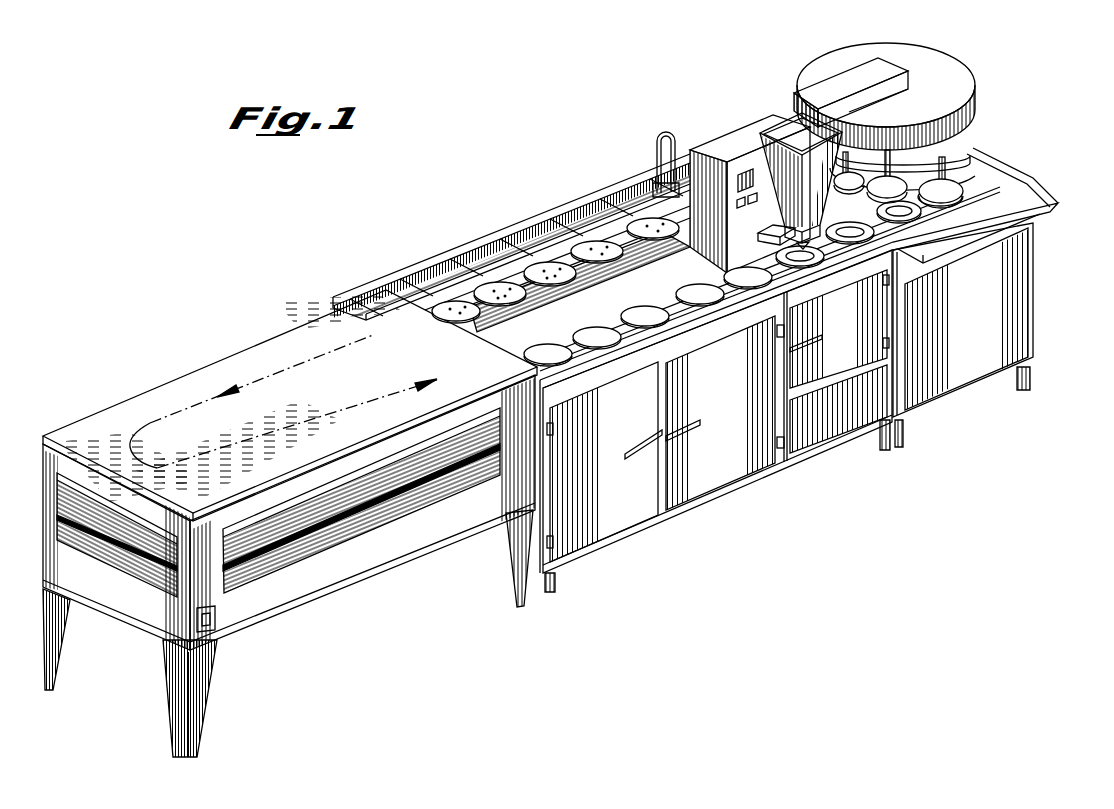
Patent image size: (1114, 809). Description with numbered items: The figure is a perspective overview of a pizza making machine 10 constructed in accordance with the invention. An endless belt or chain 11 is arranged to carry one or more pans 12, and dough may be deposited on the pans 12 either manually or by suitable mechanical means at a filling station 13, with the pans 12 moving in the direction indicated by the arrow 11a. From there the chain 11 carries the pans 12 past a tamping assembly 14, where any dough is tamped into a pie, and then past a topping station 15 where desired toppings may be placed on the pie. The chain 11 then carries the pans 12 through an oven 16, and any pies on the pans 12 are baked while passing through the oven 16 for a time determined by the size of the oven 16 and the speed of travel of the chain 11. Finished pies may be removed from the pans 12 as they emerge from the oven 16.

The pizza making machine 10 is at (370, 247).
The endless belt or chain 11 is at (520, 283).
The arrow 11a is at (283, 401).
The pans 12 is at (714, 298).
The filling station 13 is at (785, 135).
The tamping assembly 14 is at (975, 110).
The topping station 15 is at (597, 183).
The oven 16 is at (150, 403).